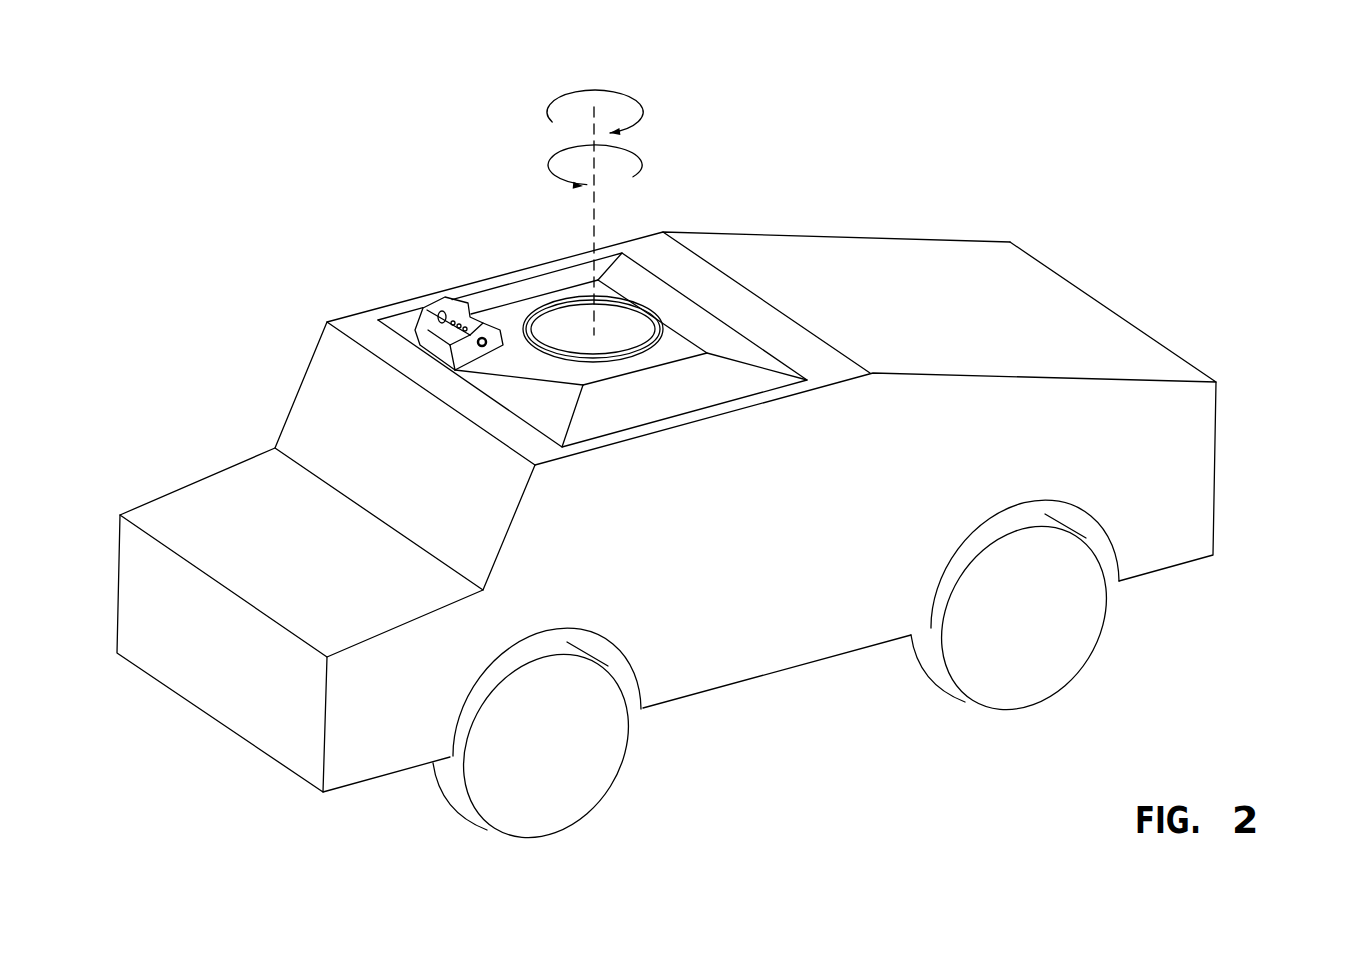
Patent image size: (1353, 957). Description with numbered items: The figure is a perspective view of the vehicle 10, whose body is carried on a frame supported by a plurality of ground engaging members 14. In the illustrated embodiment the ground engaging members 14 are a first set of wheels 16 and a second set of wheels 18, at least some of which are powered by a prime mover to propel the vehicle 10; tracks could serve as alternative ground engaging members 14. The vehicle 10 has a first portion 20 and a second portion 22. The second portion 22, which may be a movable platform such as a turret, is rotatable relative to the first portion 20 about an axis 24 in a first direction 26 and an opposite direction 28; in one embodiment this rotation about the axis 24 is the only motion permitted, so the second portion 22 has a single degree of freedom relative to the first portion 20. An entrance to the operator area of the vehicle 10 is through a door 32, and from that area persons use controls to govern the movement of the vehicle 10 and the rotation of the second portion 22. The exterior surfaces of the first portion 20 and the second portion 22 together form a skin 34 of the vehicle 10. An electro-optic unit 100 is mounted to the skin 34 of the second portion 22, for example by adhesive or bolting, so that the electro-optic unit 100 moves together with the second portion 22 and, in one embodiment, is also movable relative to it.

The vehicle 10 is at (1226, 178).
The ground engaging members 14 is at (1143, 655).
The first set of wheels 16 is at (623, 794).
The second set of wheels 18 is at (1003, 715).
The first portion 20 is at (933, 262).
The second portion 22 is at (695, 315).
The axis 24 is at (593, 222).
The direction 26 is at (548, 165).
The direction 28 is at (643, 112).
The door 32 is at (635, 325).
The skin 34 is at (573, 405).
The electro-optic unit 100 is at (418, 293).